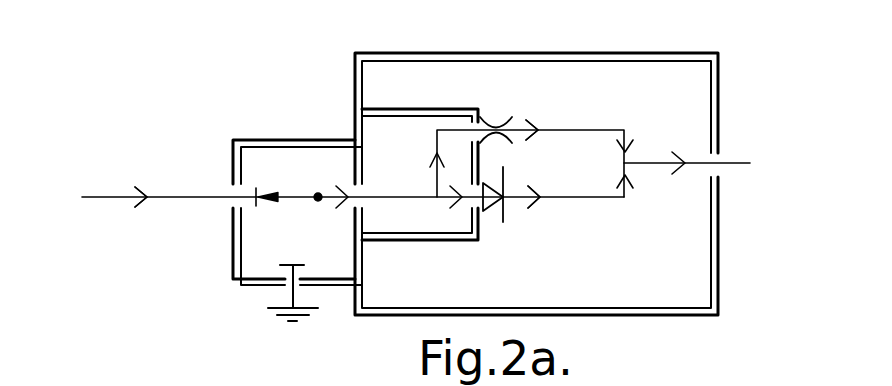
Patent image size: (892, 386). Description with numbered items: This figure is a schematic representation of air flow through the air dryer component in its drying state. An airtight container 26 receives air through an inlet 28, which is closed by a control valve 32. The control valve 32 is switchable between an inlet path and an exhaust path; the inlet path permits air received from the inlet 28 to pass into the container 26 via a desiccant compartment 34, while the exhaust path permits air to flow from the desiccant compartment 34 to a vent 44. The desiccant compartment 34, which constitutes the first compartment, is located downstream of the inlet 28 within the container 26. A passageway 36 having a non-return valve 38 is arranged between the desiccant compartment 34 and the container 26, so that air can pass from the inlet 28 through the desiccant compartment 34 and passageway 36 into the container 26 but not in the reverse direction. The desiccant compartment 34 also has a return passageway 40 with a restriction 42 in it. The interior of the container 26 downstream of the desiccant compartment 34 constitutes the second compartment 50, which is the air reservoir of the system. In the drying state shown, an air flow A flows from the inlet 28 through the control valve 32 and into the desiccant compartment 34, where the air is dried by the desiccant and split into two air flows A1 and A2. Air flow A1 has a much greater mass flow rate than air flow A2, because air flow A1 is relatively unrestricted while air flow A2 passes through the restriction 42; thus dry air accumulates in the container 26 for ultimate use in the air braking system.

The airtight container 26 is at (697, 53).
The inlet 28 is at (178, 200).
The control valve 32 is at (262, 139).
The desiccant compartment 34 is at (418, 241).
The passageway 36 is at (587, 197).
The non-return valve 38 is at (504, 220).
The return passageway 40 is at (598, 130).
The restriction 42 is at (492, 124).
The vent 44 is at (296, 292).
The second compartment 50 is at (688, 287).
The air flow A is at (143, 187).
The air flow A1 is at (540, 192).
The air flow A2 is at (530, 125).